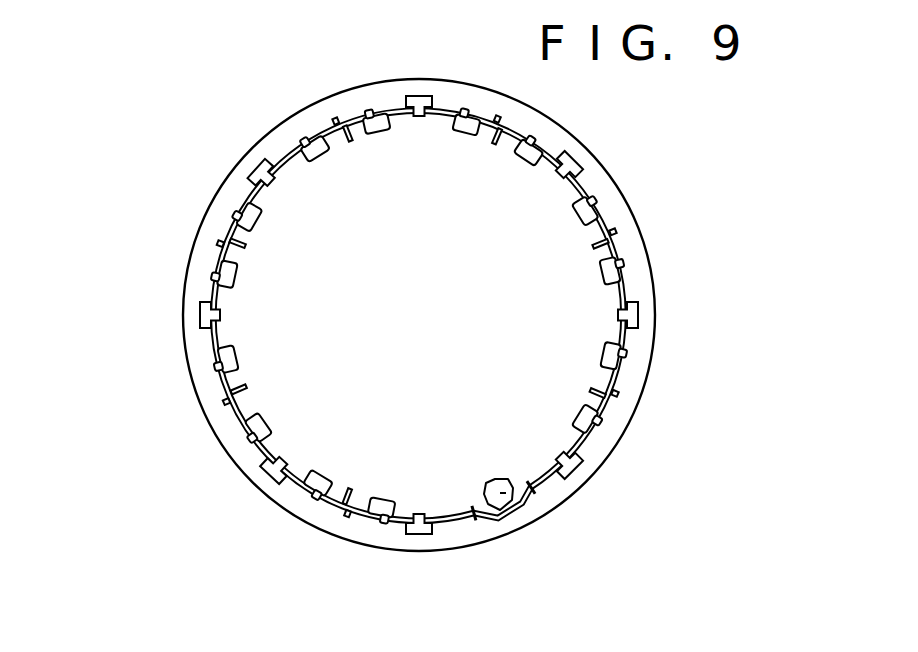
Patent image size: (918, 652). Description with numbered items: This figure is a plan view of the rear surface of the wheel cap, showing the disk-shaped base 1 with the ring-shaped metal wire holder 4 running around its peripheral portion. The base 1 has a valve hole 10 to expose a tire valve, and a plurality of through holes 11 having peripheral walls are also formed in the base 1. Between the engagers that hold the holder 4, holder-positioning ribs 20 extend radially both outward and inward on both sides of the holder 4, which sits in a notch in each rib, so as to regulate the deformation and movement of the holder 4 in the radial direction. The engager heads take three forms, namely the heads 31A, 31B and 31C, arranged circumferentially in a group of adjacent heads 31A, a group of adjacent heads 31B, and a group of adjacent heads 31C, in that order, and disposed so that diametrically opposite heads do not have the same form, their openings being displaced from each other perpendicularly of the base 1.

The base 1 is at (641, 378).
The holder 4 is at (590, 449).
The valve hole 10 is at (532, 492).
The through holes 11 is at (632, 273).
The holder-positioning ribs 20 is at (503, 124).
The head 31A is at (422, 98).
The head 31B is at (574, 474).
The head 31C is at (258, 168).